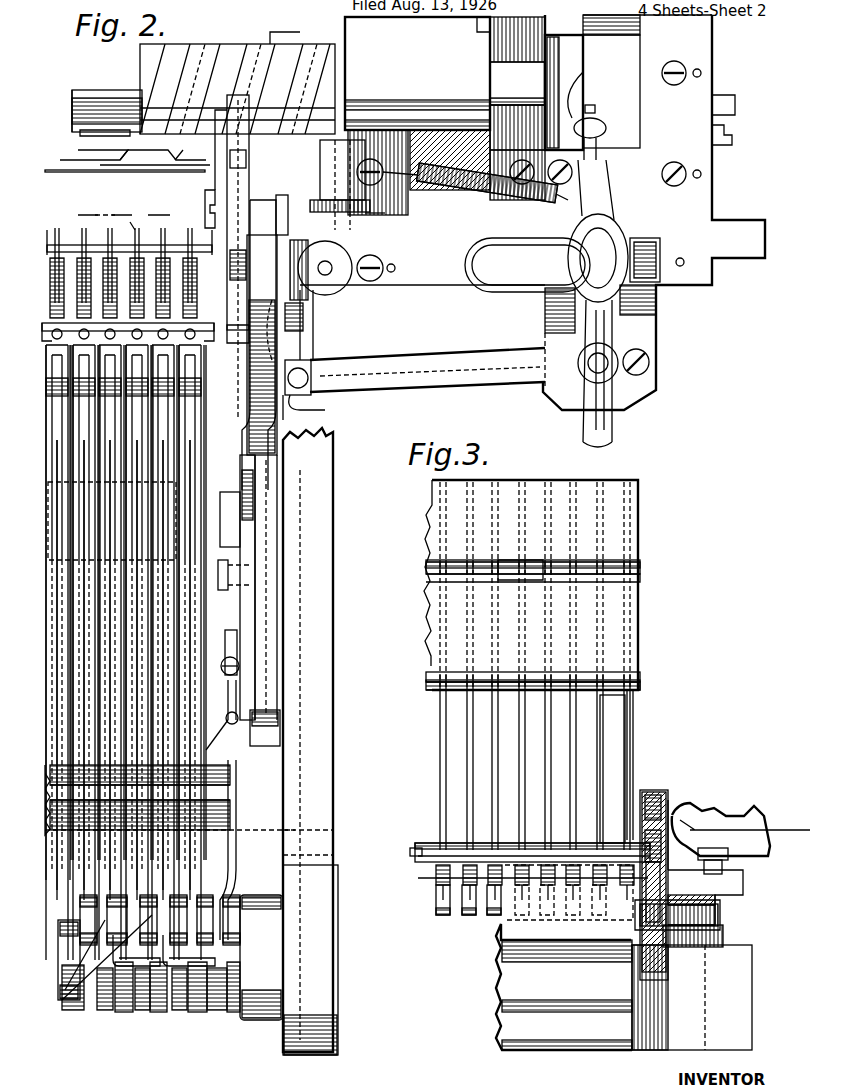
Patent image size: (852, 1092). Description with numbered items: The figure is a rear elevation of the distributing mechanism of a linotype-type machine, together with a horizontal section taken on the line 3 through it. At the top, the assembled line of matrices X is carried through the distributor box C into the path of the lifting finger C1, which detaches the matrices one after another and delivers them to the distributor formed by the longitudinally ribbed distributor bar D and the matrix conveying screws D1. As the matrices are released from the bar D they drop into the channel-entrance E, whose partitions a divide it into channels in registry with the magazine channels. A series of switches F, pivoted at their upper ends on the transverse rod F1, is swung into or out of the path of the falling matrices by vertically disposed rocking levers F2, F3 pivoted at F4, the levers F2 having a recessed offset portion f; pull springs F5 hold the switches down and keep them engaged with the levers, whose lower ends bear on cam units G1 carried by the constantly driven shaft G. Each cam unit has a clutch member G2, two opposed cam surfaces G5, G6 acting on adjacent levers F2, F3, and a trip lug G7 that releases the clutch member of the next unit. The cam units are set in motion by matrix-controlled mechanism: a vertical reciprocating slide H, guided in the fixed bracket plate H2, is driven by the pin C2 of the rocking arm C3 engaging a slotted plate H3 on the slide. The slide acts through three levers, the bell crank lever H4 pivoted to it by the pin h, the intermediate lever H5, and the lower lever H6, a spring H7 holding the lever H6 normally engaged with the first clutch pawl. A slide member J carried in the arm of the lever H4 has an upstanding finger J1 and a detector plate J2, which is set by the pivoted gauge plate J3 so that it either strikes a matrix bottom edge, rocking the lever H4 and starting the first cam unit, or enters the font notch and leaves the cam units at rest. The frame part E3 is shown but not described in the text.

In FIG. 2, the distributor bar D is at (203, 90).
In FIG. 2, the matrix conveying screws D1 is at (290, 50).
In FIG. 2, the pin h is at (200, 185).
In FIG. 3, the pin h is at (715, 915).
In FIG. 3, the slide member J is at (660, 790).
In FIG. 3, the upstanding finger J1 is at (660, 848).
In FIG. 2, the detector plate J2 is at (240, 225).
In FIG. 3, the detector plate J2 is at (655, 792).
In FIG. 2, the gauge plate J3 is at (245, 175).
In FIG. 3, the gauge plate J3 is at (668, 812).
In FIG. 2, the vertical reciprocating slide H is at (278, 210).
In FIG. 2, the bracket plate H2 is at (268, 600).
In FIG. 2, the slotted plate H3 is at (321, 407).
In FIG. 3, the slotted plate H3 is at (730, 888).
In FIG. 2, the bell crank lever H4 is at (252, 348).
In FIG. 2, the intermediate lever H5 is at (235, 558).
In FIG. 2, the lower lever H6 is at (238, 700).
In FIG. 2, the spring H7 is at (220, 770).
In FIG. 2, the matrices X is at (360, 233).
In FIG. 2, the section line 3 is at (235, 214).
In FIG. 2, the partitions a is at (129, 232).
In FIG. 3, the partitions a is at (630, 715).
In FIG. 2, the switches F is at (170, 395).
In FIG. 3, the switches F is at (625, 742).
In FIG. 3, the transverse rod F1 is at (415, 860).
In FIG. 2, the rocking lever F2 is at (183, 450).
In FIG. 3, the rocking lever F2 is at (485, 915).
In FIG. 2, the rocking lever F3 is at (185, 415).
In FIG. 3, the rocking lever F3 is at (569, 894).
In FIG. 2, the pivot F4 is at (215, 328).
In FIG. 2, the pull springs F5 is at (156, 262).
In FIG. 3, the pull springs F5 is at (420, 880).
In FIG. 2, the distributor box C is at (549, 303).
In FIG. 2, the lifting finger C1 is at (310, 325).
In FIG. 2, the pin C2 is at (308, 376).
In FIG. 3, the pin C2 is at (728, 862).
In FIG. 2, the rocking arm C3 is at (370, 364).
In FIG. 3, the rocking arm C3 is at (762, 815).
In FIG. 3, the channel-entrance E is at (638, 652).
In FIG. 2, the frame base plate E3 is at (336, 648).
In FIG. 3, the frame base plate E3 is at (564, 987).
In FIG. 2, the shaft G is at (65, 935).
In FIG. 2, the cam units G1 is at (240, 920).
In FIG. 2, the clutch member G2 is at (100, 1008).
In FIG. 2, the cam surface G5 is at (124, 1015).
In FIG. 2, the cam surface G6 is at (145, 1013).
In FIG. 2, the trip lug G7 is at (230, 950).
In FIG. 2, the recessed offset portion f is at (155, 938).